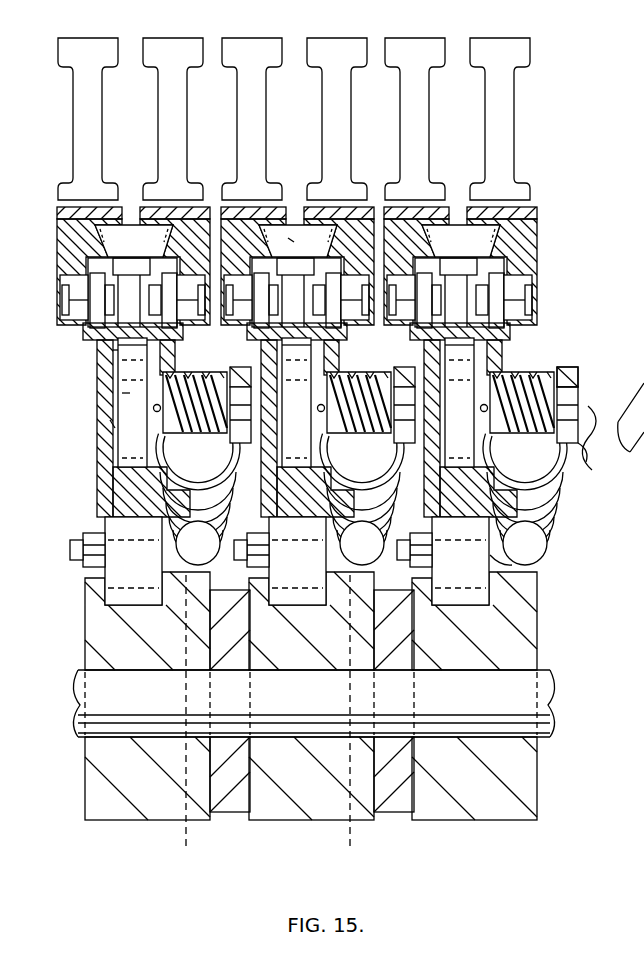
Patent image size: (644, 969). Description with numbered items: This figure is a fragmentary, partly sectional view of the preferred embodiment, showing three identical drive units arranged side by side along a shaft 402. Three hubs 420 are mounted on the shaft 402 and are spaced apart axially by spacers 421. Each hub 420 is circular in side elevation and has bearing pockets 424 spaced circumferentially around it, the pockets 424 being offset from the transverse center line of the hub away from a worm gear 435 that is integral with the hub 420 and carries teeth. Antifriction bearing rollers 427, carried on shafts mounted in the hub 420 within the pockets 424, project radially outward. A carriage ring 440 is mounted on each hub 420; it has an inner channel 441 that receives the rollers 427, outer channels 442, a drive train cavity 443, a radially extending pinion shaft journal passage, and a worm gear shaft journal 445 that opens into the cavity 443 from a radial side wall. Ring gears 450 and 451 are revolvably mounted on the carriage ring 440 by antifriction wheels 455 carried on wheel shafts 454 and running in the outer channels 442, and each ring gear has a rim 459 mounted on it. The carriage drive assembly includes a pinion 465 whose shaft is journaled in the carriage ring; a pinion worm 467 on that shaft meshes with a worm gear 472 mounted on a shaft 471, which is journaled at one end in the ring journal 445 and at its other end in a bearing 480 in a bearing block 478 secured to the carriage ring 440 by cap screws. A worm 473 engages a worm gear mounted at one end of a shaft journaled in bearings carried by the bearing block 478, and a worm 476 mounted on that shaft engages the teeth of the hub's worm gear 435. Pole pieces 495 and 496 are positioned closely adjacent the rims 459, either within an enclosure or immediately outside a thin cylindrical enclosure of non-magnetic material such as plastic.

The shaft 402 is at (555, 667).
The hub 420 is at (108, 812).
The spacer 421 is at (218, 812).
The worm gear 435 is at (269, 729).
The pole piece 495 is at (251, 119).
The pole piece 496 is at (336, 119).
The rim 459 is at (122, 207).
The ring gear 451 is at (537, 236).
The ring gear 450 is at (452, 147).
The pinion 465 is at (290, 238).
The antifriction wheel 455 is at (167, 277).
The wheel shaft 454 is at (519, 298).
The pinion worm 467 is at (488, 367).
The carriage ring 440 is at (508, 352).
The worm gear 472 is at (128, 440).
The outer channel 442 is at (115, 352).
The drive train cavity 443 is at (125, 395).
The worm gear shaft journal 445 is at (112, 425).
The worm 476 is at (550, 522).
The antifriction bearing roller 427 is at (115, 520).
The bearing pocket 424 is at (118, 598).
The worm 473 is at (575, 377).
The bearing block 478 is at (580, 395).
The shaft 471 is at (604, 438).
The bearing 480 is at (608, 463).
The inner channel 441 is at (512, 566).